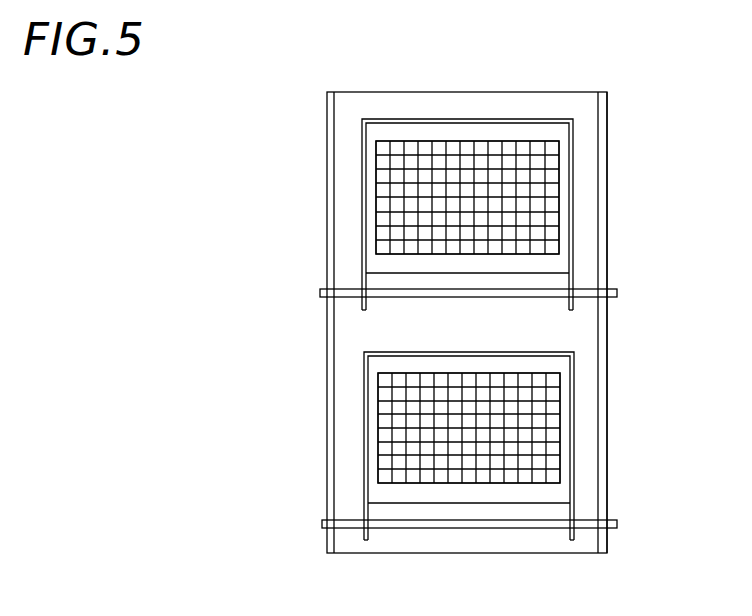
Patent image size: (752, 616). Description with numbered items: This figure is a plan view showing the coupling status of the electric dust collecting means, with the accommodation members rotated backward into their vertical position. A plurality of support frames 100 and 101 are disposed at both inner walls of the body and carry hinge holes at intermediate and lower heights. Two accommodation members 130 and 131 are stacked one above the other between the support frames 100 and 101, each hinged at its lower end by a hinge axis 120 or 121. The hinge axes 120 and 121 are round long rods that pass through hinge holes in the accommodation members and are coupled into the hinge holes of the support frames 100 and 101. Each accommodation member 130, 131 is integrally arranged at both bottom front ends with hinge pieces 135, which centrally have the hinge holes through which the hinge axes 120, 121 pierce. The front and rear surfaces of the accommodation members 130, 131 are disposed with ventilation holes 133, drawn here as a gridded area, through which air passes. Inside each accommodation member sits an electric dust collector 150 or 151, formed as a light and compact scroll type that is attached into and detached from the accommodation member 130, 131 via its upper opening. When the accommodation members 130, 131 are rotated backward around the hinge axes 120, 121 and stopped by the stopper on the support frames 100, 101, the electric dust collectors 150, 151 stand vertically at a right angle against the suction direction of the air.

The support frame 100 is at (325, 108).
The support frame 101 is at (608, 143).
The hinge axis 120 is at (540, 293).
The hinge axis 121 is at (535, 528).
The accommodation member 130 is at (466, 119).
The accommodation member 131 is at (543, 351).
The ventilation hole 133 is at (377, 177).
The hinge piece 135 is at (363, 311).
The electric dust collector 150 is at (547, 195).
The electric dust collector 151 is at (549, 427).